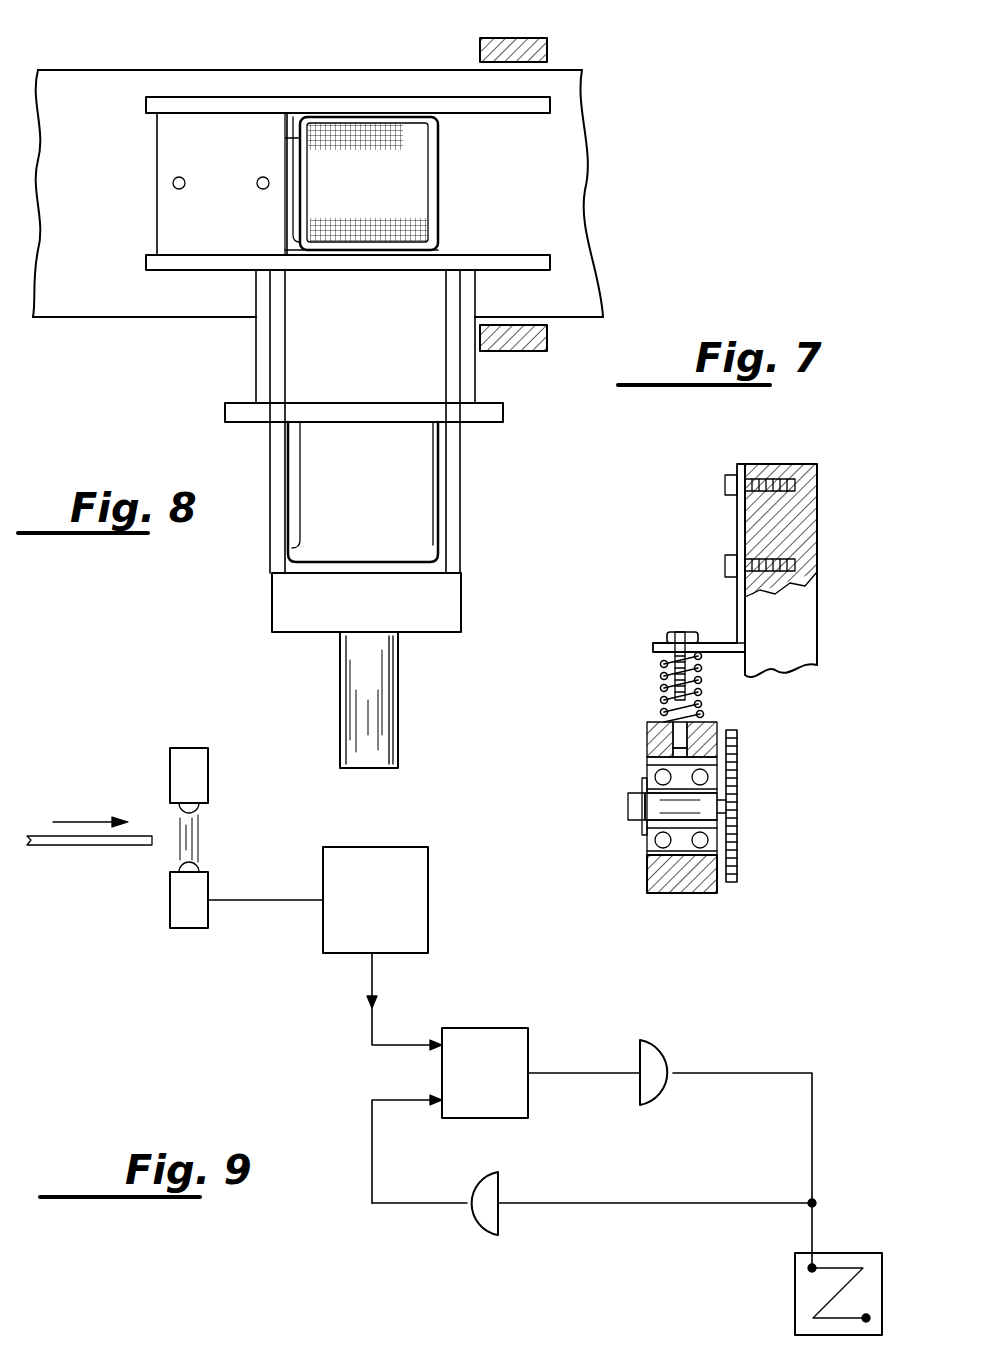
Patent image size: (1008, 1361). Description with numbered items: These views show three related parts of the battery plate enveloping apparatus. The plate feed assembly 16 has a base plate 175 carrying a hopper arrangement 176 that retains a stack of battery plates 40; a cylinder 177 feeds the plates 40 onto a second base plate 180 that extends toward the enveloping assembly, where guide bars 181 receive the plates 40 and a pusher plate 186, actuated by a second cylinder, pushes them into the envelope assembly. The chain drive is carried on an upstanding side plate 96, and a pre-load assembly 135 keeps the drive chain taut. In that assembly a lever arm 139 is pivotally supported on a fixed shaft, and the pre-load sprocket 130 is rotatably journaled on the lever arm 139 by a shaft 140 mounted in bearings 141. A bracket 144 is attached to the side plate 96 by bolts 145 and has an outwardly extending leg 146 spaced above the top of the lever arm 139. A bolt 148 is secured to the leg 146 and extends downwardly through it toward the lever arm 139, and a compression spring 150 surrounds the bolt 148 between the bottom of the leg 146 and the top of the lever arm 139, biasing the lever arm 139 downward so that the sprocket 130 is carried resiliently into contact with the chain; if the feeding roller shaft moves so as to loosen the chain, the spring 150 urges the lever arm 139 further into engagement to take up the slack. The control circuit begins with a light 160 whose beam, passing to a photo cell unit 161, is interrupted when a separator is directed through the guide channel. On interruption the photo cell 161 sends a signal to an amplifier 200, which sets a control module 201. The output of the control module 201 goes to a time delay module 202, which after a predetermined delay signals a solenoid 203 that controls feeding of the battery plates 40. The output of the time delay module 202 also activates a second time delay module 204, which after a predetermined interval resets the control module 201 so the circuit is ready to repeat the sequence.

In FIG. 8, the plate feed assembly 16 is at (494, 436).
In FIG. 8, the battery plates 40 is at (417, 167).
In FIG. 8, the side plate 96 is at (540, 38).
In FIG. 7, the side plate 96 is at (812, 525).
In FIG. 7, the pre-load sprocket 130 is at (740, 845).
In FIG. 7, the pre-load assembly 135 is at (650, 678).
In FIG. 7, the lever arm 139 is at (650, 875).
In FIG. 7, the shaft 140 is at (652, 805).
In FIG. 7, the bearings 141 is at (650, 752).
In FIG. 7, the bracket 144 is at (737, 617).
In FIG. 7, the bolts 145 is at (724, 485).
In FIG. 7, the leg 146 is at (712, 640).
In FIG. 7, the bolt 148 is at (680, 633).
In FIG. 7, the compression spring 150 is at (660, 692).
In FIG. 9, the light 160 is at (196, 773).
In FIG. 9, the photo cell unit 161 is at (175, 905).
In FIG. 8, the base plate 175 is at (448, 611).
In FIG. 8, the hopper arrangement 176 is at (235, 394).
In FIG. 8, the cylinder 177 is at (355, 677).
In FIG. 8, the second base plate 180 is at (328, 82).
In FIG. 8, the guide bars 181 is at (395, 103).
In FIG. 8, the pusher plate 186 is at (205, 120).
In FIG. 9, the amplifier 200 is at (340, 930).
In FIG. 9, the control module 201 is at (483, 1040).
In FIG. 9, the time delay module 202 is at (655, 1066).
In FIG. 9, the solenoid 203 is at (855, 1262).
In FIG. 9, the second time delay module 204 is at (483, 1215).